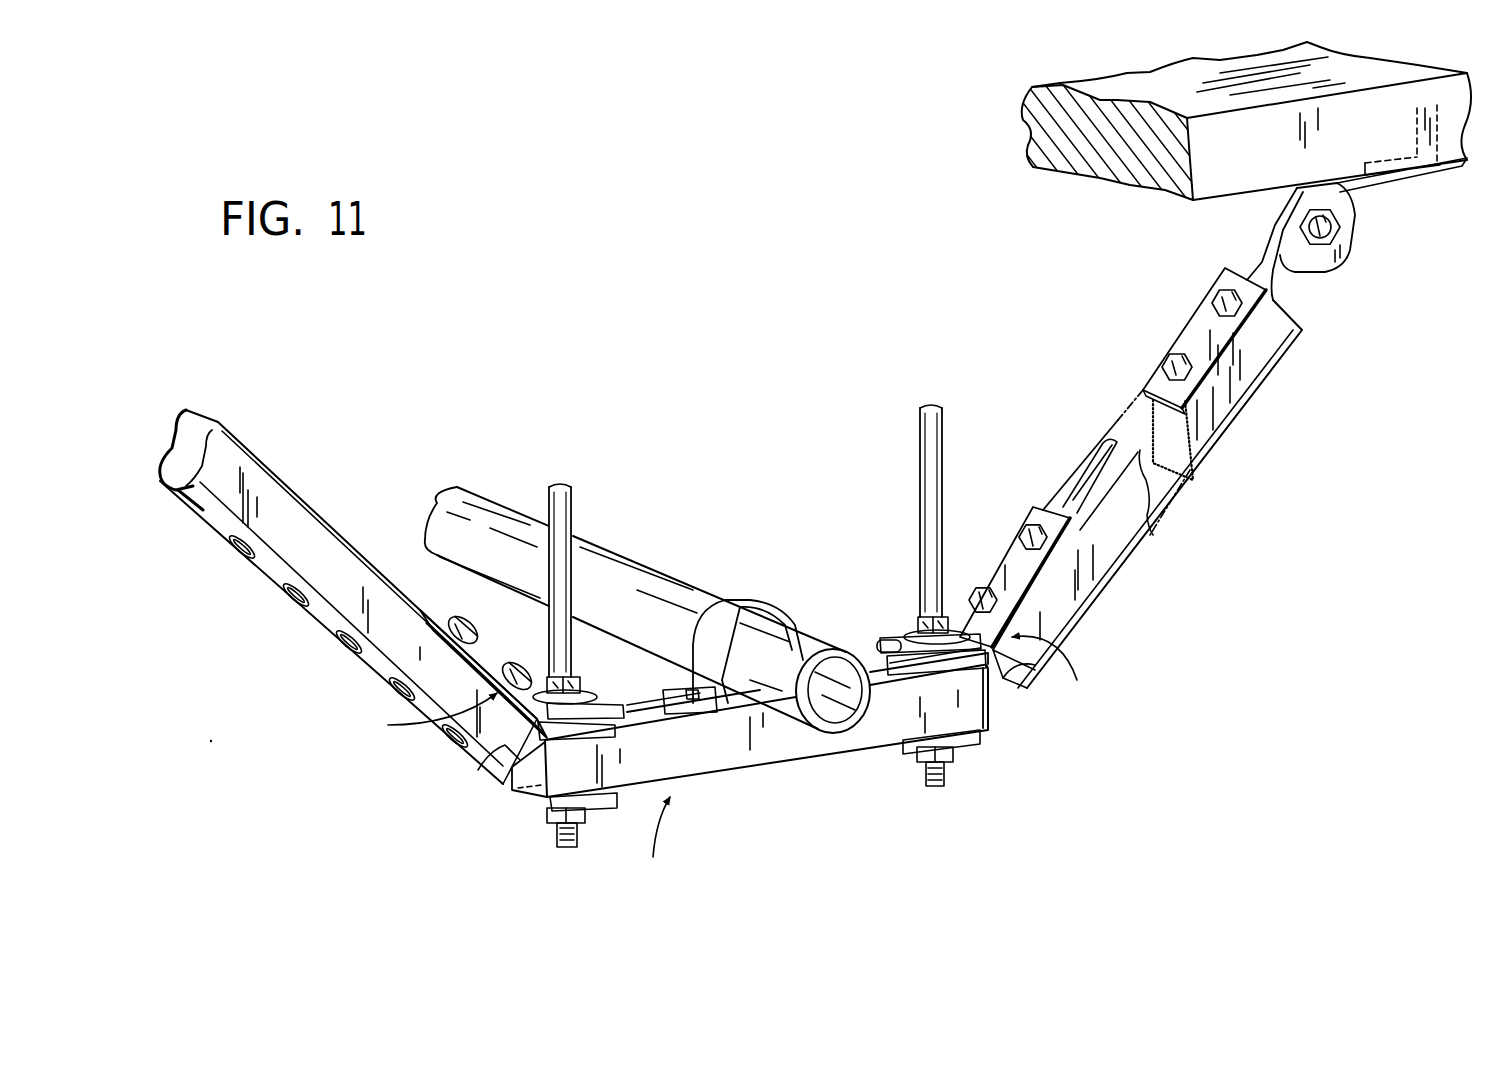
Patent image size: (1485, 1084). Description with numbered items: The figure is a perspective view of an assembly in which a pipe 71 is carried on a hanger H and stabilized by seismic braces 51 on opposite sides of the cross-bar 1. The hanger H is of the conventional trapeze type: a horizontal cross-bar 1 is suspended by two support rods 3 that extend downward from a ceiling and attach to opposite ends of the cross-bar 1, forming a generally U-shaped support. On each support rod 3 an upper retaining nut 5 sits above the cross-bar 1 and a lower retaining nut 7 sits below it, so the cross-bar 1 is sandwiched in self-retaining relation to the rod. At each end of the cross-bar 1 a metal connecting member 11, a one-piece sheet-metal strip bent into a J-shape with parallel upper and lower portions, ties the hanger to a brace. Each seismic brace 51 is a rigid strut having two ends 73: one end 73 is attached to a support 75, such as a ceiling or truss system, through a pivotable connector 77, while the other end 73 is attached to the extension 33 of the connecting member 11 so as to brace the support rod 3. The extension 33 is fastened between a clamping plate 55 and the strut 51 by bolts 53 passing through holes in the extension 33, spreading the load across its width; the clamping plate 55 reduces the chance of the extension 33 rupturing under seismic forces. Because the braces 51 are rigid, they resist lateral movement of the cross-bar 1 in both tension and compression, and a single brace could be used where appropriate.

The cross-bar 1 is at (783, 767).
The support rod 3 is at (553, 485).
The upper retaining nut 5 is at (580, 688).
The lower retaining nut 7 is at (550, 820).
The metal connecting member 11 is at (733, 687).
The extension 33 is at (1043, 597).
The seismic brace 51 is at (270, 568).
The bolts 53 is at (1025, 520).
The clamping plate 55 is at (1040, 507).
The pipe 71 is at (457, 503).
The ends of seismic brace 73 is at (1275, 345).
The support 75 is at (1230, 182).
The pivotable connector 77 is at (1330, 253).
The hanger H is at (659, 841).